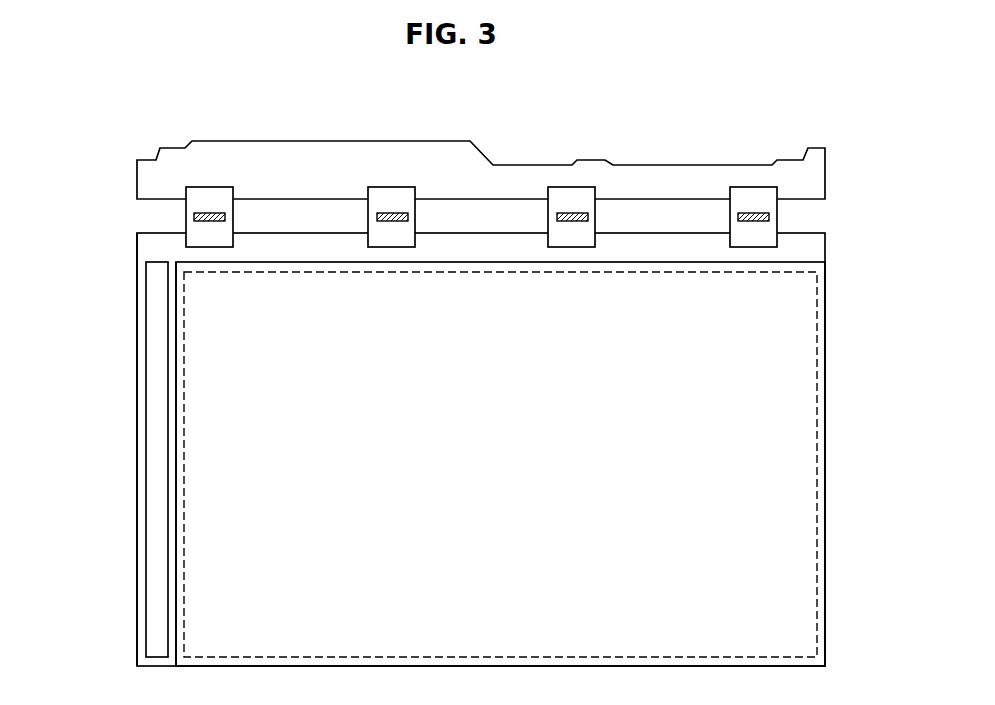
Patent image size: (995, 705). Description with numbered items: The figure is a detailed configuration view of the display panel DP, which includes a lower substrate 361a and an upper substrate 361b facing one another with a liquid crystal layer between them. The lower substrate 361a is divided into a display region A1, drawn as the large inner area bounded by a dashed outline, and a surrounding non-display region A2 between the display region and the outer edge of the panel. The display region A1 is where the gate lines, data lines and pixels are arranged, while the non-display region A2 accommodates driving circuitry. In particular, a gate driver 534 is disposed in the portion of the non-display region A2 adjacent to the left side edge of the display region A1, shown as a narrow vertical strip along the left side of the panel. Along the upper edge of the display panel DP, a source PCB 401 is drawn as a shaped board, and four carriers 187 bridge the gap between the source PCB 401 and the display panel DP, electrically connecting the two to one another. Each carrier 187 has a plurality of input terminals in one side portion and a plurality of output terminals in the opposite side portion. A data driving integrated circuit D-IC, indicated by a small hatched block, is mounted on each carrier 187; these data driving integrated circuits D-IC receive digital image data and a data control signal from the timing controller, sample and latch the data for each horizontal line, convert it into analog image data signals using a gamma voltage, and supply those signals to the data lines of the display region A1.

The display panel DP is at (452, 383).
The display region A1 is at (817, 452).
The non-display region A2 is at (807, 249).
The source PCB 401 is at (288, 165).
The carrier 187 is at (187, 216).
The data driving integrated circuit D-IC is at (208, 211).
The gate driver 534 is at (156, 455).
The lower substrate 361a is at (137, 582).
The upper substrate 361b is at (176, 627).